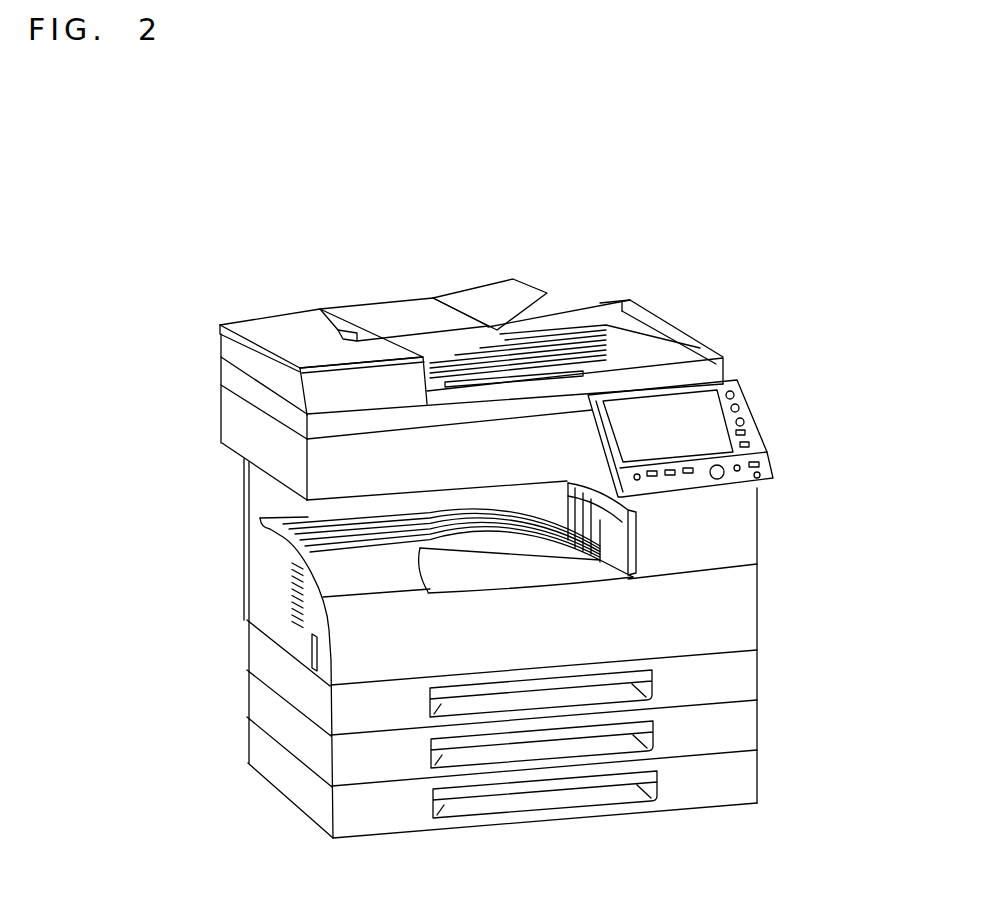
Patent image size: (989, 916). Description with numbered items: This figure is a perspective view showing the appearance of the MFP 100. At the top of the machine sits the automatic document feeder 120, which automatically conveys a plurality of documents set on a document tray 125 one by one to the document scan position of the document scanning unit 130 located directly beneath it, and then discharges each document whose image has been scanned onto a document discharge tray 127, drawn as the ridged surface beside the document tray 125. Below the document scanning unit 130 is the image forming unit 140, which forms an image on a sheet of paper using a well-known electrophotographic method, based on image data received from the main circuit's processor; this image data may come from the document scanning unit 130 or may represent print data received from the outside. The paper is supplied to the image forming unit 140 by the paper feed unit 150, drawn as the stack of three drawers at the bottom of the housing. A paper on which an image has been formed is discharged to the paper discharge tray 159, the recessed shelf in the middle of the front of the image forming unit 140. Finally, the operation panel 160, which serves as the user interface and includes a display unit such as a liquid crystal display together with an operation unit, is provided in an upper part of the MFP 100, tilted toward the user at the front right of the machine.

The MFP 100 is at (237, 193).
The automatic document feeder 120 is at (272, 313).
The document tray 125 is at (492, 296).
The document discharge tray 127 is at (626, 345).
The document scanning unit 130 is at (228, 417).
The image forming unit 140 is at (728, 611).
The paper feed unit 150 is at (231, 613).
The paper discharge tray 159 is at (278, 523).
The operation panel 160 is at (677, 423).